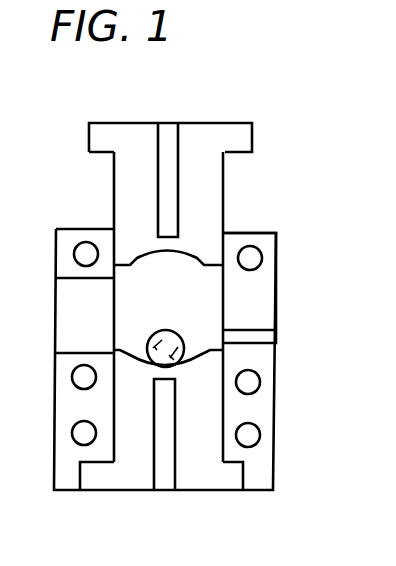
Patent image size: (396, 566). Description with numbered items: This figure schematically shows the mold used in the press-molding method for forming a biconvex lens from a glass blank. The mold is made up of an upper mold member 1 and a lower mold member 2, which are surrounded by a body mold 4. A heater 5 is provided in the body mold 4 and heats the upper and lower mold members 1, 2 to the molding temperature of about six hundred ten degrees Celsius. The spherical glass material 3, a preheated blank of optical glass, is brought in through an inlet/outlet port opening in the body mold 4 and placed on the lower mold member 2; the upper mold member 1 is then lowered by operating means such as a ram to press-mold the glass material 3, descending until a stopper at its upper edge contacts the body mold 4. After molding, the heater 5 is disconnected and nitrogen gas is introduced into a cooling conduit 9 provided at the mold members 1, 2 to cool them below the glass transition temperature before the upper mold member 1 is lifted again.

The upper mold member 1 is at (233, 130).
The lower mold member 2 is at (220, 482).
The spherical glass material 3 is at (162, 330).
The body mold 4 is at (262, 285).
The heater 5 is at (262, 260).
The cooling conduit 9 is at (170, 124).